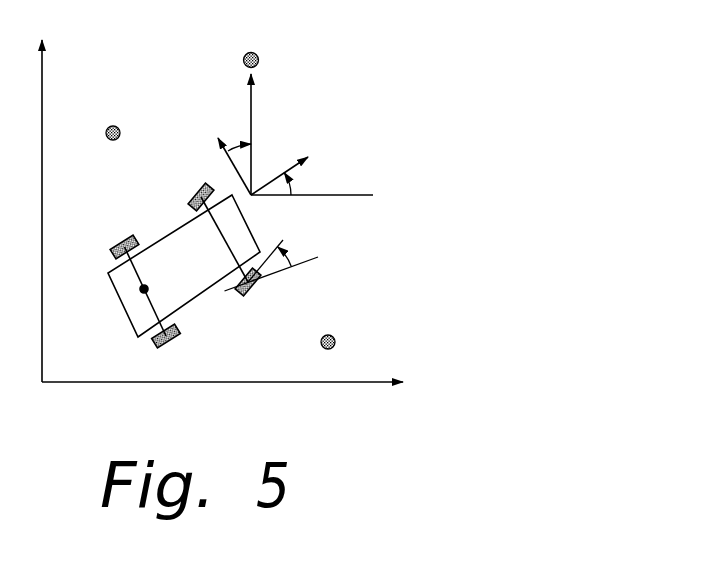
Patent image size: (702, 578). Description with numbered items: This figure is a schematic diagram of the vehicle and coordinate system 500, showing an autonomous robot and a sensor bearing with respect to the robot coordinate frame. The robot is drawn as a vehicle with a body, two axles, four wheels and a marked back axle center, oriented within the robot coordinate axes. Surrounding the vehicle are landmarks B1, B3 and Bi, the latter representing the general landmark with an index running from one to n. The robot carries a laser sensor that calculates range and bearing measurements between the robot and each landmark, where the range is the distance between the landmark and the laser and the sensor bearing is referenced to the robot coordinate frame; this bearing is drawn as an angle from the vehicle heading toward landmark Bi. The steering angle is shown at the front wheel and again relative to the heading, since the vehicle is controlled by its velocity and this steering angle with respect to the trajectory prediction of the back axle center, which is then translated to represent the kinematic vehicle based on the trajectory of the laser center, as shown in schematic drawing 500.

The vehicle and coordinate system 500 is at (490, 95).
The landmark B1 is at (349, 336).
The landmark B3 is at (131, 134).
The landmark Bi is at (268, 64).